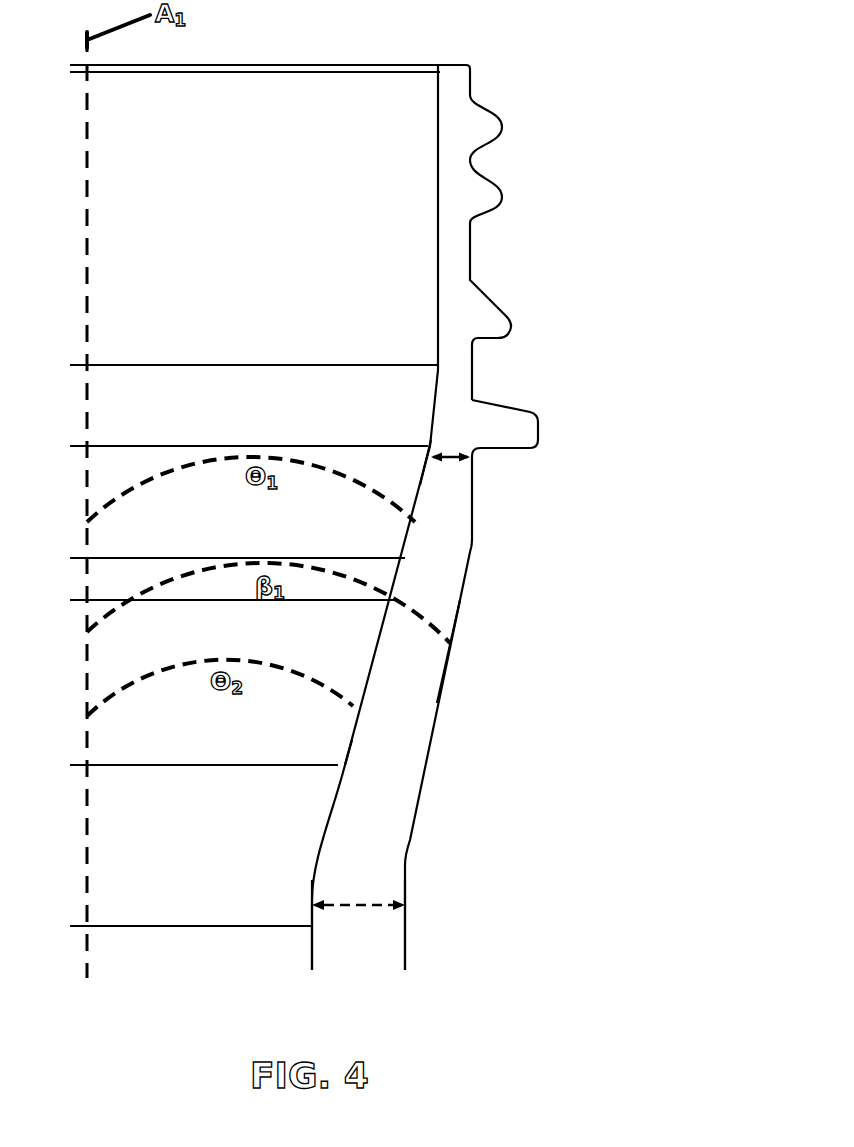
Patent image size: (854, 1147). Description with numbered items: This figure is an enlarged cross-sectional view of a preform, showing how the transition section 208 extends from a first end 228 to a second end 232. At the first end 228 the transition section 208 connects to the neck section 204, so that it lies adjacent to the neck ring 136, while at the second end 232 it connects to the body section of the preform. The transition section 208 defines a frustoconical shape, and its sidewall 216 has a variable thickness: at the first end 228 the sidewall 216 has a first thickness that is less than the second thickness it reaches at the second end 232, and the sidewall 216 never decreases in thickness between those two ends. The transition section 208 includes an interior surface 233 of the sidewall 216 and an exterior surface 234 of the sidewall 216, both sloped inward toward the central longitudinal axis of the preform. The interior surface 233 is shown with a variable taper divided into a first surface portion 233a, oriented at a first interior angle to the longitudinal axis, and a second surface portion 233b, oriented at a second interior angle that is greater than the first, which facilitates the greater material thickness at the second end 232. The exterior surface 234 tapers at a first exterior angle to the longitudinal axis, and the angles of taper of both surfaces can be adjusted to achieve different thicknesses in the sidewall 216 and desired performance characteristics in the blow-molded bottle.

The neck section 204 is at (525, 228).
The neck ring 136 is at (540, 430).
The first end 228 is at (485, 460).
The transition section 208 is at (523, 640).
The exterior surface 234 is at (437, 703).
The sidewall 216 is at (383, 795).
The second end 232 is at (415, 908).
The interior surface 233 is at (368, 672).
The first surface portion 233a is at (423, 480).
The second surface portion 233b is at (350, 732).